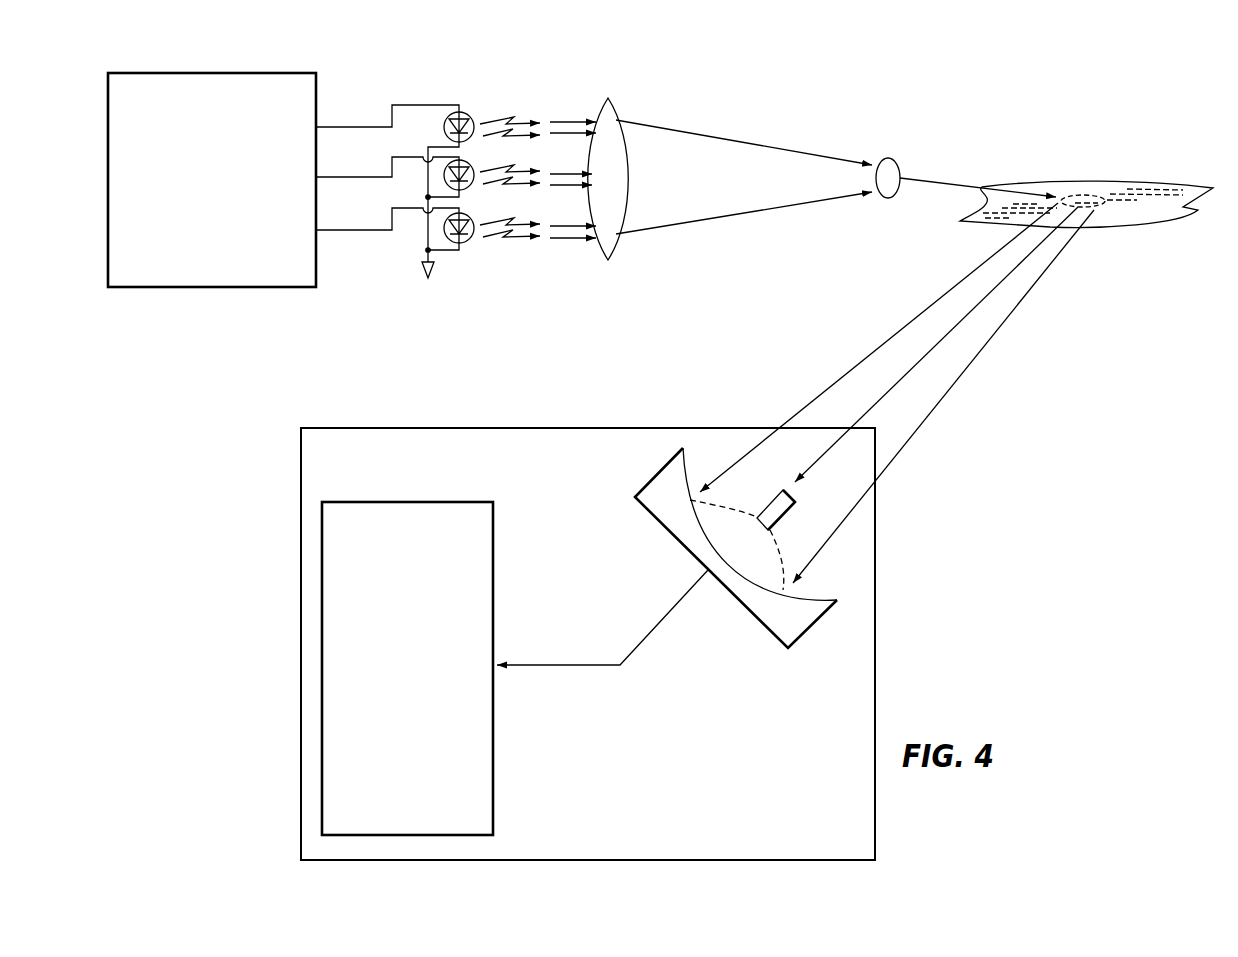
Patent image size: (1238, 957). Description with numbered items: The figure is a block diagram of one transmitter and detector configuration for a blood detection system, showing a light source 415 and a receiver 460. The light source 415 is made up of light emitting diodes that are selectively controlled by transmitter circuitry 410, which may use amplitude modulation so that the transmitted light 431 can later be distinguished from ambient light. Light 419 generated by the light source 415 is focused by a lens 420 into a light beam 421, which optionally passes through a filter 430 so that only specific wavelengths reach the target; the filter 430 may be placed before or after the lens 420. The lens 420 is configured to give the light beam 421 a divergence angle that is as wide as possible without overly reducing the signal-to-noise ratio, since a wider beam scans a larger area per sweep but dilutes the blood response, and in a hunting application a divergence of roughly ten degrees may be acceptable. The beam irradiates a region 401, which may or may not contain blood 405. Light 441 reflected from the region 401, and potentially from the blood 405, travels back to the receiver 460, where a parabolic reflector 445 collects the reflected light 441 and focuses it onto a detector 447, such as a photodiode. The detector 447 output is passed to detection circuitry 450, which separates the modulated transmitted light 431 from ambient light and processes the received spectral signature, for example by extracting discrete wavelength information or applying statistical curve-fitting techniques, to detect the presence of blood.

The region 401 is at (1128, 213).
The blood 405 is at (1085, 196).
The transmitter circuitry 410 is at (196, 212).
The light source 415 is at (462, 262).
The light 419 is at (558, 122).
The lens 420 is at (618, 118).
The light beam 421 is at (737, 142).
The filter 430 is at (888, 158).
The transmitted light 431 is at (952, 183).
The reflected light 441 is at (975, 362).
The parabolic reflector 445 is at (663, 487).
The detector 447 is at (795, 516).
The detection circuitry 450 is at (392, 680).
The receiver 460 is at (569, 854).